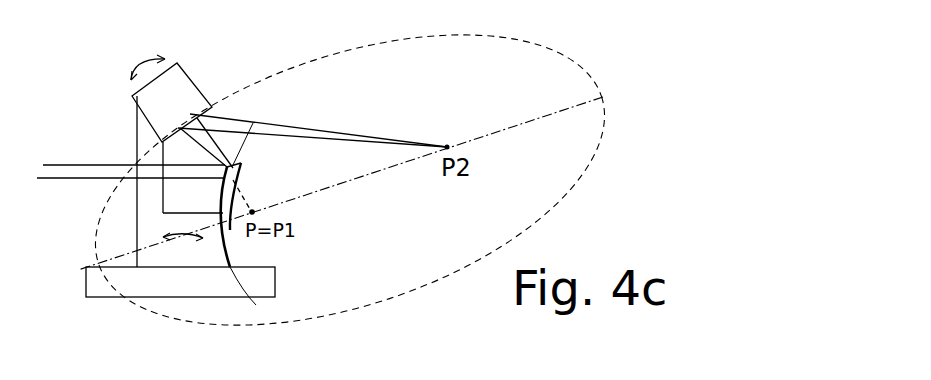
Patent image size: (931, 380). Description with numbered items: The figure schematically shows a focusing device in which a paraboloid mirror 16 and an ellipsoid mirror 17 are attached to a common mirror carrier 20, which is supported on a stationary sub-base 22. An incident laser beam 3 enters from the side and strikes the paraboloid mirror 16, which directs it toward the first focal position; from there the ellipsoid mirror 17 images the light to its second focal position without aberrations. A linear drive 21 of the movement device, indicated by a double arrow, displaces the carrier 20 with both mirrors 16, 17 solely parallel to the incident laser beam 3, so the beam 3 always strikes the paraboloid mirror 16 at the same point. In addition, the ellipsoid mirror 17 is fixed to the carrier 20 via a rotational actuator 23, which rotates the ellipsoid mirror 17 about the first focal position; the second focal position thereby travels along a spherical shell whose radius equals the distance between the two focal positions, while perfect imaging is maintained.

The incident laser beam 3 is at (68, 165).
The paraboloid mirror 16 is at (223, 192).
The ellipsoid mirror 17 is at (193, 118).
The common mirror carrier 20 is at (145, 137).
The linear drive 21 is at (190, 237).
The stationary sub-base 22 is at (87, 285).
The rotational actuator 23 is at (182, 83).